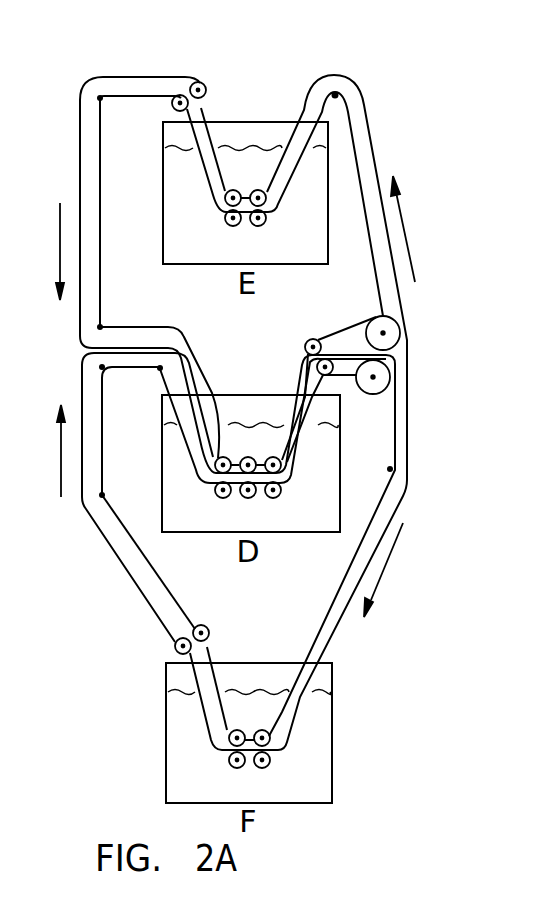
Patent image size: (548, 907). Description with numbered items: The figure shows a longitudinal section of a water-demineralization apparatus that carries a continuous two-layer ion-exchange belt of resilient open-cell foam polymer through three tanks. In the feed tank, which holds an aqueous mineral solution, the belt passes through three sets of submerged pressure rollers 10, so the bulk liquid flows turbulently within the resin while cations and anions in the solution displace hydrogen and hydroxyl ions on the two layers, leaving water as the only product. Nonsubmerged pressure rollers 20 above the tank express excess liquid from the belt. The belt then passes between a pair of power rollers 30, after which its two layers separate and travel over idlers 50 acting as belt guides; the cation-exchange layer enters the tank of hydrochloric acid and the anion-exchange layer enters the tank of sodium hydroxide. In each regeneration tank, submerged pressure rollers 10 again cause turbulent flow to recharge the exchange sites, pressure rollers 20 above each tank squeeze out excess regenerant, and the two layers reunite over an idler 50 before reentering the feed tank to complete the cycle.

The set of full-submerged, full-compression pressure rollers 10 is at (233, 227).
The set of nonsubmerged, full-compression pressure rollers 20 is at (203, 82).
The power roller 30 is at (378, 318).
The idler roller 50 is at (103, 104).